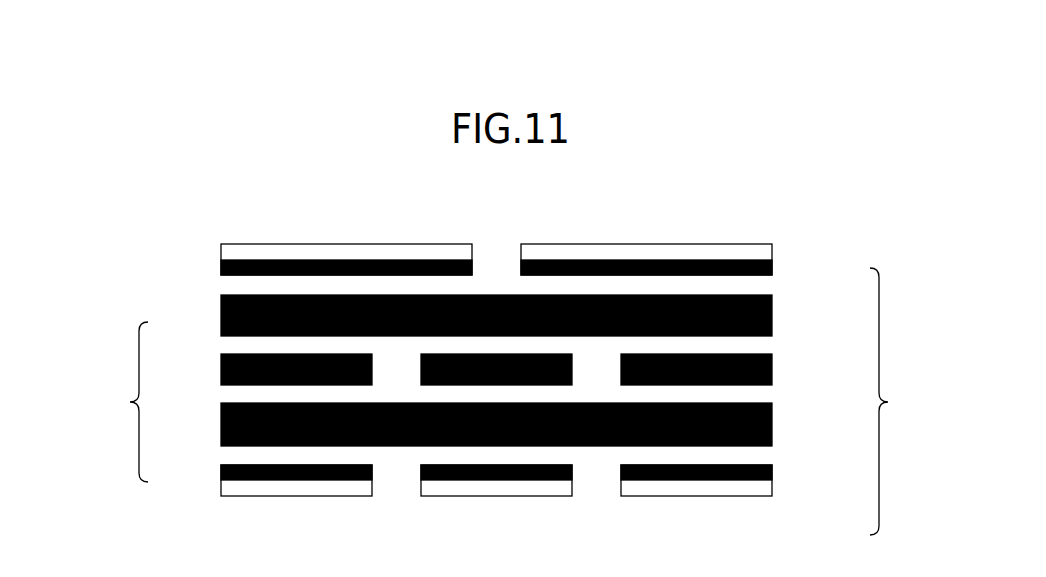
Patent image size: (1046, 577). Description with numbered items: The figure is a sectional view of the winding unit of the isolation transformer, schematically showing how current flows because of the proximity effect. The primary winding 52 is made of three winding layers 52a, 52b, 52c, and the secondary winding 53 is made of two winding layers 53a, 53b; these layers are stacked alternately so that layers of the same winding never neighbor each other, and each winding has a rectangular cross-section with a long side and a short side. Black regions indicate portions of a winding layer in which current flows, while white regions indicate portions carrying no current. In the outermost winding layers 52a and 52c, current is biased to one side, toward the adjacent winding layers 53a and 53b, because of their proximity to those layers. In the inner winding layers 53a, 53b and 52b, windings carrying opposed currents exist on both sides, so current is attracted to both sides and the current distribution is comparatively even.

The primary winding 52 is at (898, 401).
The winding layer 52a is at (768, 255).
The winding layer 52b is at (772, 375).
The winding layer 52c is at (766, 487).
The secondary winding 53 is at (120, 402).
The winding layer 53a is at (221, 327).
The winding layer 53b is at (221, 437).